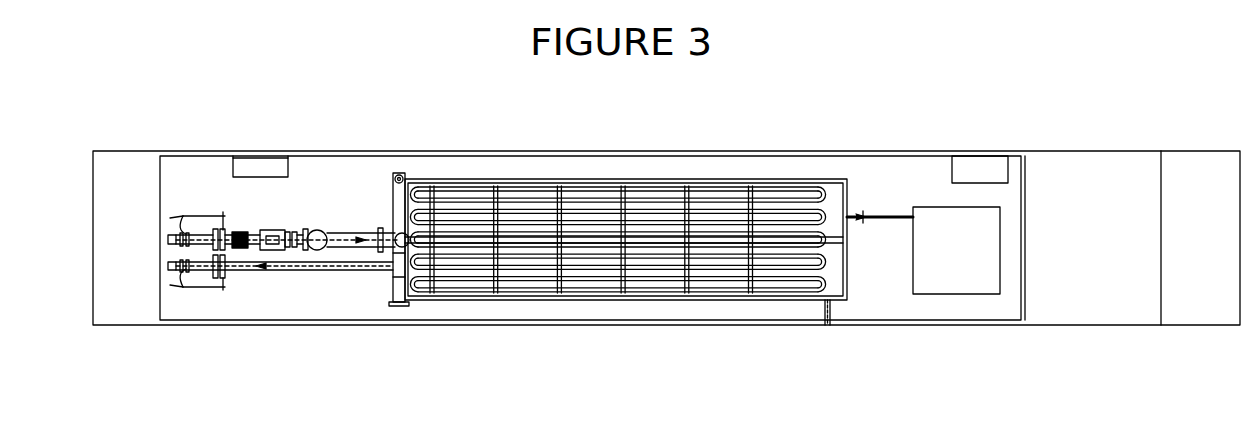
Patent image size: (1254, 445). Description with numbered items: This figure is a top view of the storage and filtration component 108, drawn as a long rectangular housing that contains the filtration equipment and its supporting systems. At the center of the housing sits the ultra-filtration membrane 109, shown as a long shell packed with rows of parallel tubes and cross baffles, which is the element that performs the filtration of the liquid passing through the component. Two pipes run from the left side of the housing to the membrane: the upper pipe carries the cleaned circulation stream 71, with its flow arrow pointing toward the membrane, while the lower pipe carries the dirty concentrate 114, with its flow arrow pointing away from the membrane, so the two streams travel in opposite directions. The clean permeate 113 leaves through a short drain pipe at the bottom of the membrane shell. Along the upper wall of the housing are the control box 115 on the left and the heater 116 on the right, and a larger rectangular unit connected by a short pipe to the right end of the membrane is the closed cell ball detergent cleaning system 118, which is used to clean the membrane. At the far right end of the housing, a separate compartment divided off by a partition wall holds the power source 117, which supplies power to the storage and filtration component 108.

The storage and filtration component 108 is at (1153, 110).
The ultra-filtration membrane 109 is at (654, 193).
The clean permeate 113 is at (831, 310).
The dirty concentrate 114 is at (328, 270).
The control box 115 is at (290, 162).
The heater 116 is at (952, 163).
The power source 117 is at (1161, 243).
The closed cell ball detergent cleaning system 118 is at (955, 294).
The cleaned circulation stream 71 is at (345, 237).